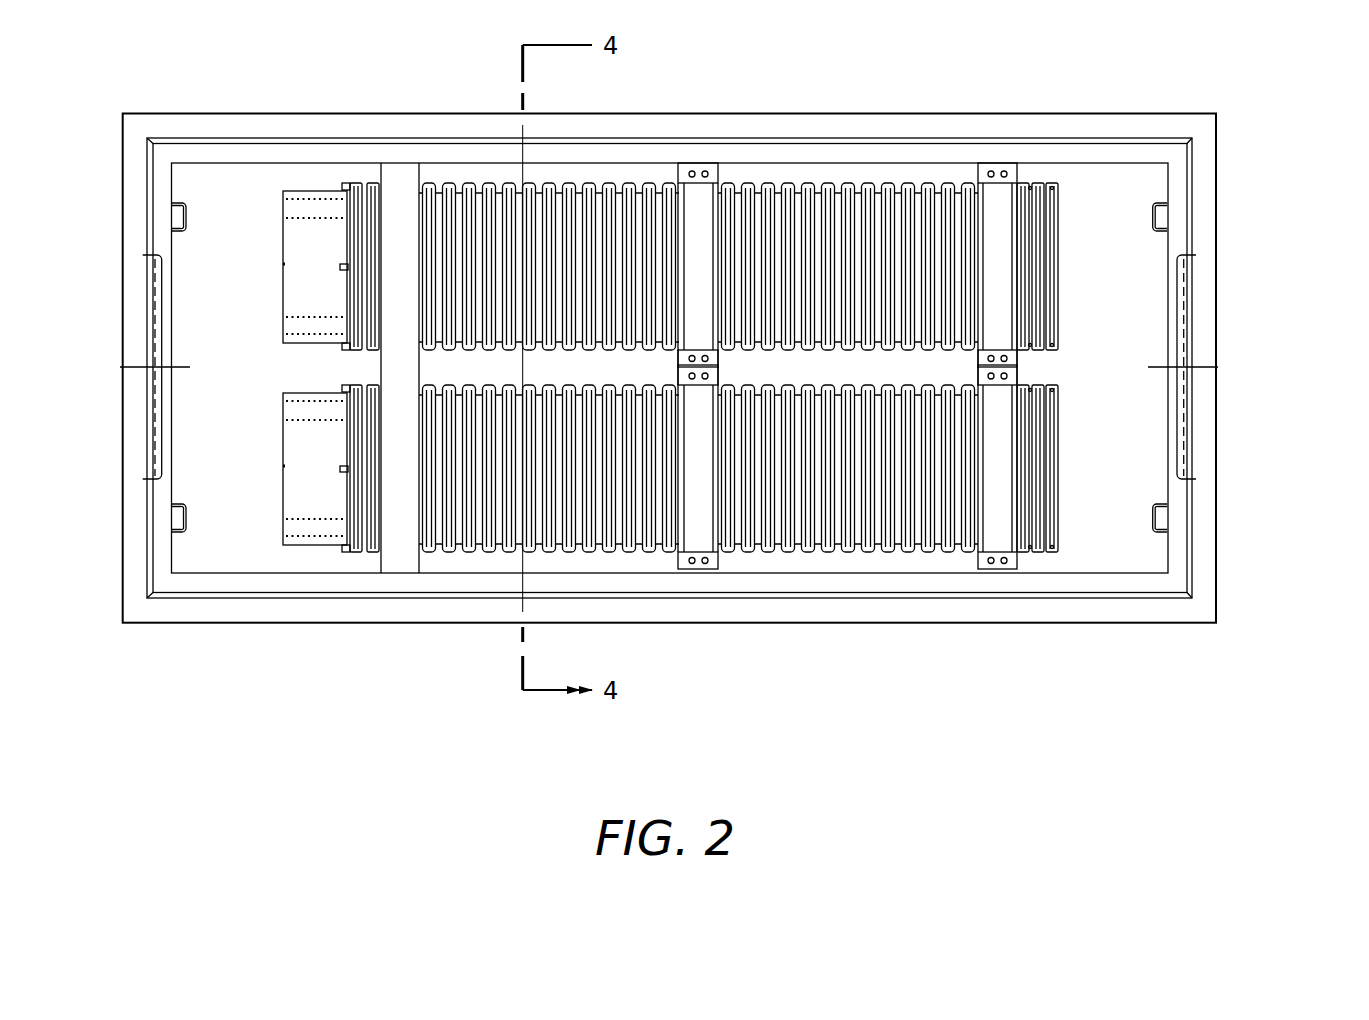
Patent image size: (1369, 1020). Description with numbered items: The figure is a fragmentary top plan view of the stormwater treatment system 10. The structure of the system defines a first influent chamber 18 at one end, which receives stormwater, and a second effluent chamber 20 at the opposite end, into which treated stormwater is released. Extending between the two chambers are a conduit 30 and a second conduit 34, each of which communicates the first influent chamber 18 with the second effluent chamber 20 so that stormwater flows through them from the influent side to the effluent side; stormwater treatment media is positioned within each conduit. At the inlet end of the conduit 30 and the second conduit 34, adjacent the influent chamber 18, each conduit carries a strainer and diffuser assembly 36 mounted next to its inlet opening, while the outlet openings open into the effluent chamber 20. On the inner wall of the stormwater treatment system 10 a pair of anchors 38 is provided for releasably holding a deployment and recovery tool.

The stormwater treatment system 10 is at (1270, 307).
The first influent chamber 18 is at (226, 447).
The second effluent chamber 20 is at (1095, 273).
The conduit 30 is at (808, 552).
The second conduit 34 is at (806, 183).
The strainer and diffuser assembly 36 is at (298, 191).
The anchors 38 is at (176, 218).